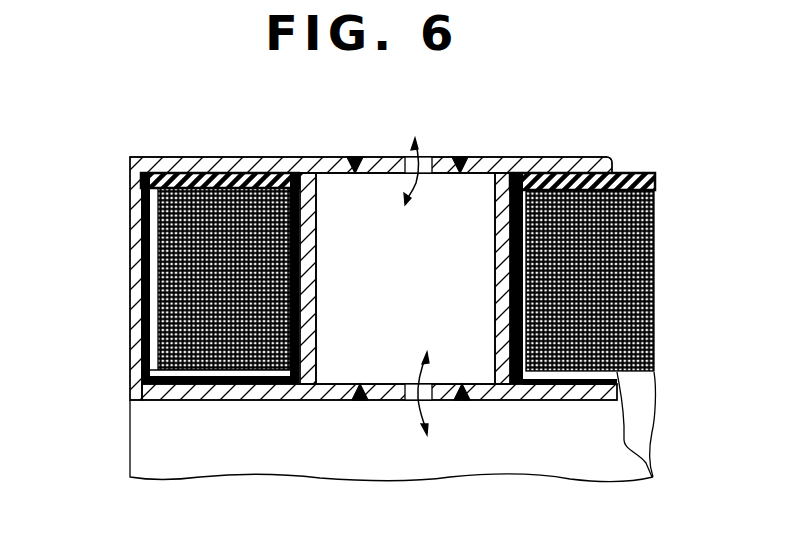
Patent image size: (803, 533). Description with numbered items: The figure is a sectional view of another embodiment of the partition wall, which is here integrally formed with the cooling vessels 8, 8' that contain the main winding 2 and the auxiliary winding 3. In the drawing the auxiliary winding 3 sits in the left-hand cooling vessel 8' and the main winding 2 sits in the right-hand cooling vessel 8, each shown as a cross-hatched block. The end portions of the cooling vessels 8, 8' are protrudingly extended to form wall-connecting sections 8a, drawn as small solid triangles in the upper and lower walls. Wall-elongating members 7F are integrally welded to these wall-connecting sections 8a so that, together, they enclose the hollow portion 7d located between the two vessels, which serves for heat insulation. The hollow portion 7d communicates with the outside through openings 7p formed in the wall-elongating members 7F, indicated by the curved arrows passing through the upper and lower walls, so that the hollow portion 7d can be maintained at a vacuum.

The main winding 2 is at (600, 289).
The auxiliary winding 3 is at (230, 289).
The hollow portion 7d is at (430, 290).
The wall-elongating members 7F is at (386, 157).
The openings 7p is at (427, 173).
The cooling vessel 8 is at (392, 427).
The cooling vessel 8' is at (371, 312).
The wall-connecting sections 8a is at (327, 157).